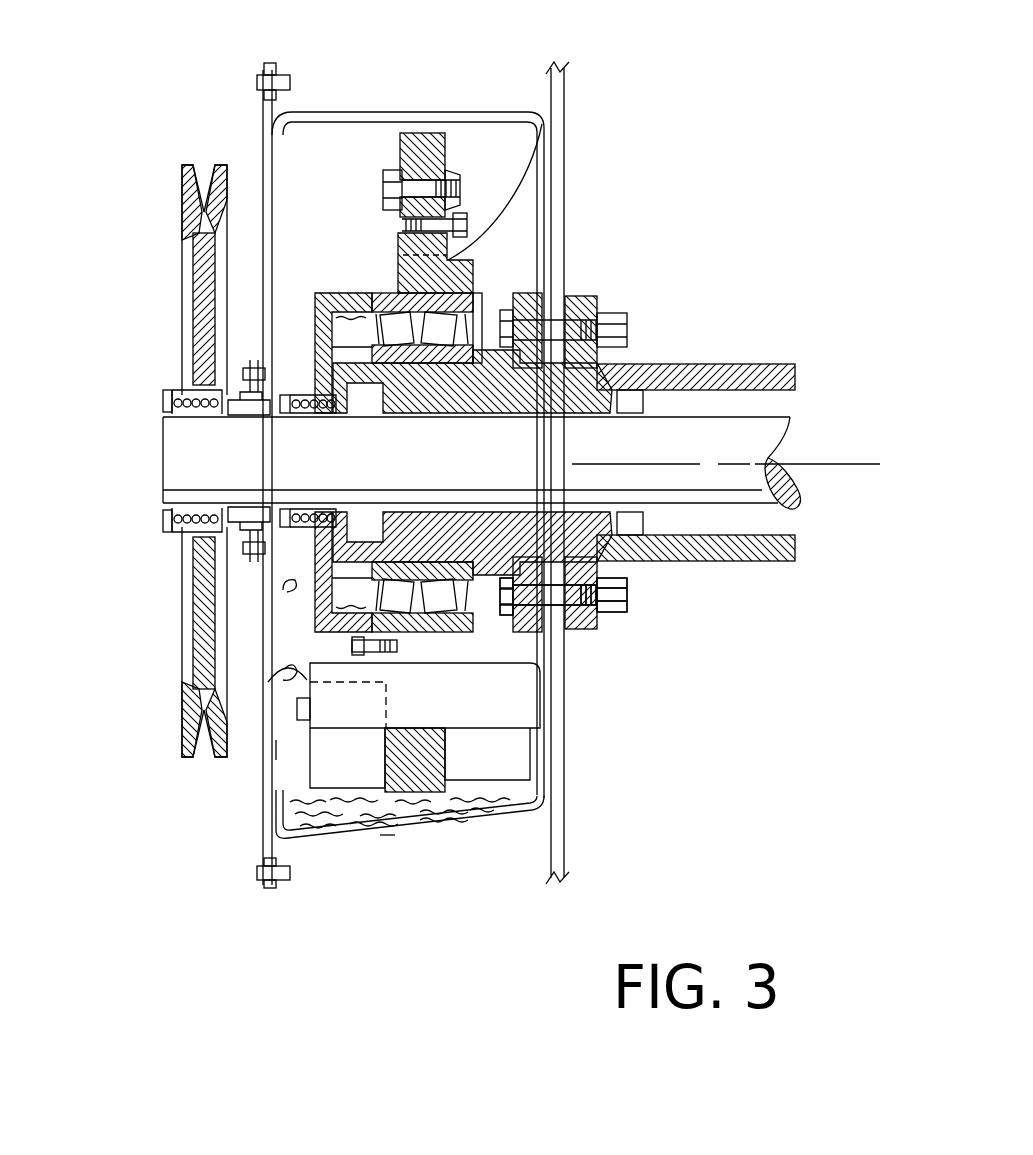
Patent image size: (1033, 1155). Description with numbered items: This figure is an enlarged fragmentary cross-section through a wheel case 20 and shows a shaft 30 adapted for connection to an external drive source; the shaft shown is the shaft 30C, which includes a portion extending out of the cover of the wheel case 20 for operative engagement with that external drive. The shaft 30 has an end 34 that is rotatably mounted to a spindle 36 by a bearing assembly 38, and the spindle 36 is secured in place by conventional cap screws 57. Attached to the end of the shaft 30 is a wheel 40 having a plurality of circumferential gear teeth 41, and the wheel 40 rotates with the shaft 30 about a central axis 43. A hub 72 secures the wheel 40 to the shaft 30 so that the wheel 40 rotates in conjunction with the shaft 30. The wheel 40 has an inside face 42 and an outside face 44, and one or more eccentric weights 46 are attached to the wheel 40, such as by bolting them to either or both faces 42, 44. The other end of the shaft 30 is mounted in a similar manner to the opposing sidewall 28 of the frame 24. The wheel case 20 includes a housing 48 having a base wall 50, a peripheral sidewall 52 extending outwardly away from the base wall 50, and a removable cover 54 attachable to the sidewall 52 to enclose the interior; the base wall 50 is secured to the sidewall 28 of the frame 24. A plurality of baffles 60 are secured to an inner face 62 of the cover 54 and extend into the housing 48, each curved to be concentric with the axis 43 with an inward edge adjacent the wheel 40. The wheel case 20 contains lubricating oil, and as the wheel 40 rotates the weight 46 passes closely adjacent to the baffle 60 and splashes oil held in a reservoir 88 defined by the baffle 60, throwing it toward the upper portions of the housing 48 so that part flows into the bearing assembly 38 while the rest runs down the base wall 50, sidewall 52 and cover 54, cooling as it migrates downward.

The wheel case 20 is at (386, 844).
The frame 24 is at (573, 786).
The sidewall 28 is at (565, 748).
The shaft 30 is at (732, 422).
The shaft 30C is at (793, 422).
The end 34 is at (228, 467).
The spindle 36 is at (517, 377).
The bearing assembly 38 is at (497, 327).
The wheel 40 is at (470, 290).
The gear teeth 41 is at (418, 135).
The inside face 42 is at (400, 247).
The central axis 43 is at (843, 465).
The outside face 44 is at (480, 267).
The eccentric weights 46 is at (500, 755).
The housing 48 is at (450, 840).
The base wall 50 is at (540, 657).
The peripheral sidewall 52 is at (327, 838).
The cover 54 is at (263, 830).
The cap screws 57 is at (627, 590).
The baffles 60 is at (290, 668).
The inner face 62 is at (283, 582).
The hub 72 is at (313, 360).
The reservoir 88 is at (287, 748).